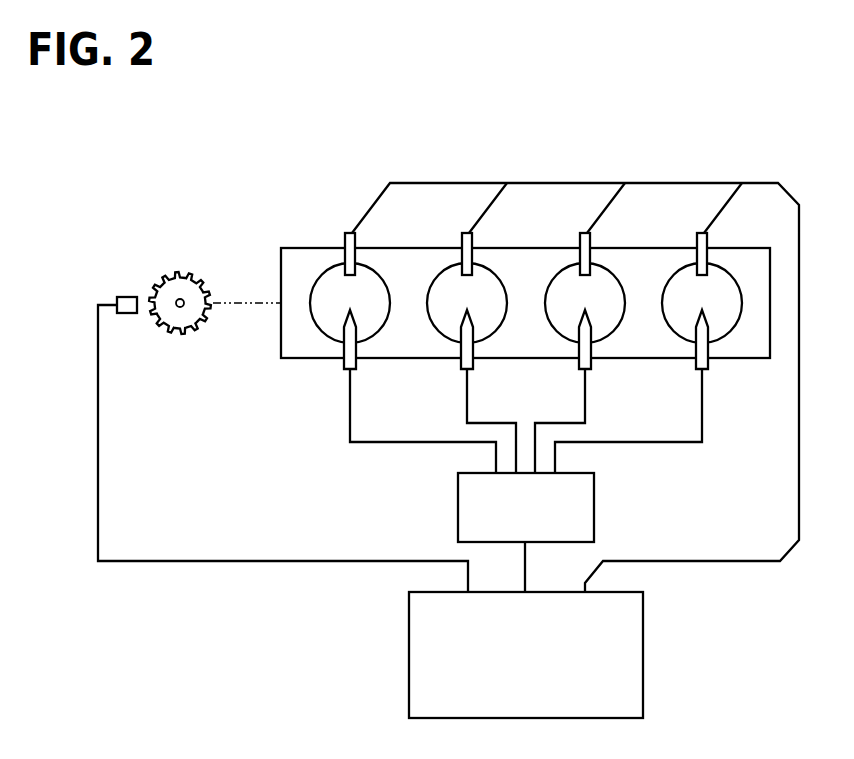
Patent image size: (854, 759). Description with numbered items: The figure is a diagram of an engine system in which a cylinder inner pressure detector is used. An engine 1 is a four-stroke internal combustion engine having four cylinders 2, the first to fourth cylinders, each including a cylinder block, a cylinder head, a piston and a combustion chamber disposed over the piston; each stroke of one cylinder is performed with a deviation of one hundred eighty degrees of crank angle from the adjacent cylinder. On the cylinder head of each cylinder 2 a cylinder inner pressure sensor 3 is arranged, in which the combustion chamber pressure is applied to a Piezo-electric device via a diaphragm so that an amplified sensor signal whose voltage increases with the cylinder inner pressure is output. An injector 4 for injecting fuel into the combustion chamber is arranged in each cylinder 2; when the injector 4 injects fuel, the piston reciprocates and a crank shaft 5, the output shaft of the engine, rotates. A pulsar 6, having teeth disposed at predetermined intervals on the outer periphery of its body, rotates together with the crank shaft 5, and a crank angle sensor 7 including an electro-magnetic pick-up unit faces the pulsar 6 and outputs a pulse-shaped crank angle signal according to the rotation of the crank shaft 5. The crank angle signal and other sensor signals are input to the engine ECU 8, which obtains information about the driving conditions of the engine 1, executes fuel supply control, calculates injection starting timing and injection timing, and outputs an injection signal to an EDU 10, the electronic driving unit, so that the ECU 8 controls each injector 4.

The engine 1 is at (771, 333).
The cylinder 2 is at (375, 337).
The cylinder inner pressure sensor 3 is at (357, 238).
The injector 4 is at (345, 322).
The crank shaft 5 is at (178, 307).
The pulsar 6 is at (205, 322).
The crank angle sensor 7 is at (127, 295).
The engine ECU 8 is at (643, 652).
The EDU 10 is at (594, 505).